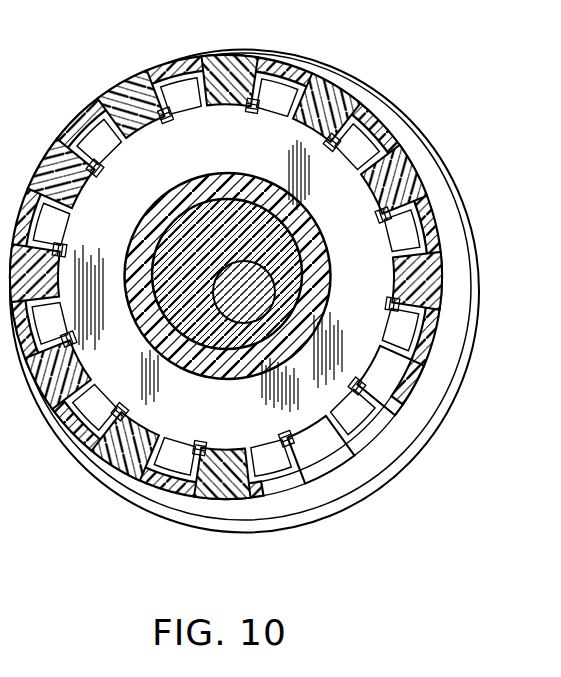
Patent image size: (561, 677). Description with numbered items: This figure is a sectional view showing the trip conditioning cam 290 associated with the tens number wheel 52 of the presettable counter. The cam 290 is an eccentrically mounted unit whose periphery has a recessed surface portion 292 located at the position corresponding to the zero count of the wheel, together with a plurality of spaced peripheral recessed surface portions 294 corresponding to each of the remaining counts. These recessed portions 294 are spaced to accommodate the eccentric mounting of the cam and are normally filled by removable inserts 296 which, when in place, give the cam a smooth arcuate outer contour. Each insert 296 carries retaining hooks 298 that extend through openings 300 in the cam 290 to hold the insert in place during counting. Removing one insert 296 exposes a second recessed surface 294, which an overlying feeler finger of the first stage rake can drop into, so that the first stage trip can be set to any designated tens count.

The tens number wheel 52 is at (467, 204).
The trip conditioning cam 290 is at (313, 478).
The recessed surface portion 292 is at (430, 325).
The peripheral recessed surface portions 294 is at (289, 73).
The removable inserts 296 is at (414, 167).
The retaining hooks 298 is at (157, 131).
The openings 300 is at (277, 100).